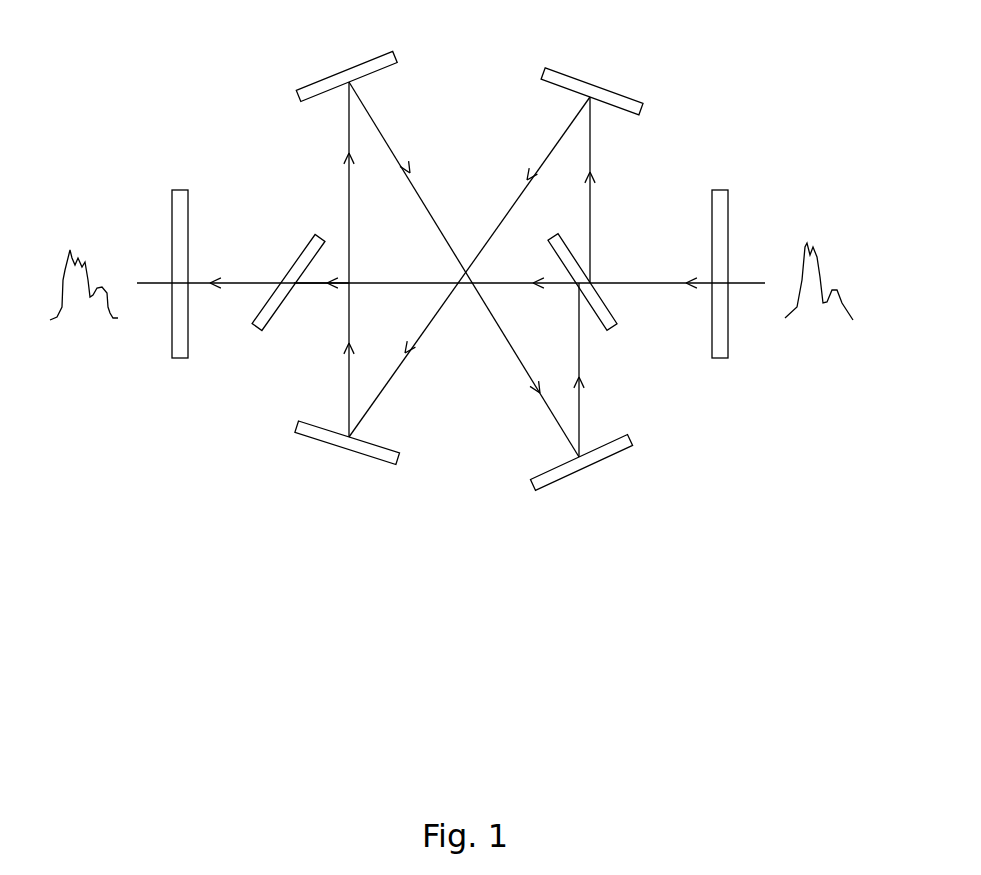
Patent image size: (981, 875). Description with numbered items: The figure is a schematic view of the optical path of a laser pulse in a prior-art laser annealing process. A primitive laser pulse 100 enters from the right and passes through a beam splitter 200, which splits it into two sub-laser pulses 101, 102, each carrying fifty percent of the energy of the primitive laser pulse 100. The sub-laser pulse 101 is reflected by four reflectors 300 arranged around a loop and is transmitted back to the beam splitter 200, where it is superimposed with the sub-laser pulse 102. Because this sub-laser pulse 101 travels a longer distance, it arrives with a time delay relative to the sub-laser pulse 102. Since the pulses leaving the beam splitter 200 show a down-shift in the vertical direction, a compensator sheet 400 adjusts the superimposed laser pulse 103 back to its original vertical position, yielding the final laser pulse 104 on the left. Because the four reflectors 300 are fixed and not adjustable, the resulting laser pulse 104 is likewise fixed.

The primitive laser pulse 100 is at (818, 272).
The sub-laser pulse 101 is at (592, 200).
The sub-laser pulse 102 is at (558, 293).
The superimposed laser pulse 103 is at (315, 287).
The laser pulse 104 is at (65, 273).
The beam splitter 200 is at (577, 260).
The reflectors 300 is at (570, 78).
The compensator sheet 400 is at (293, 263).